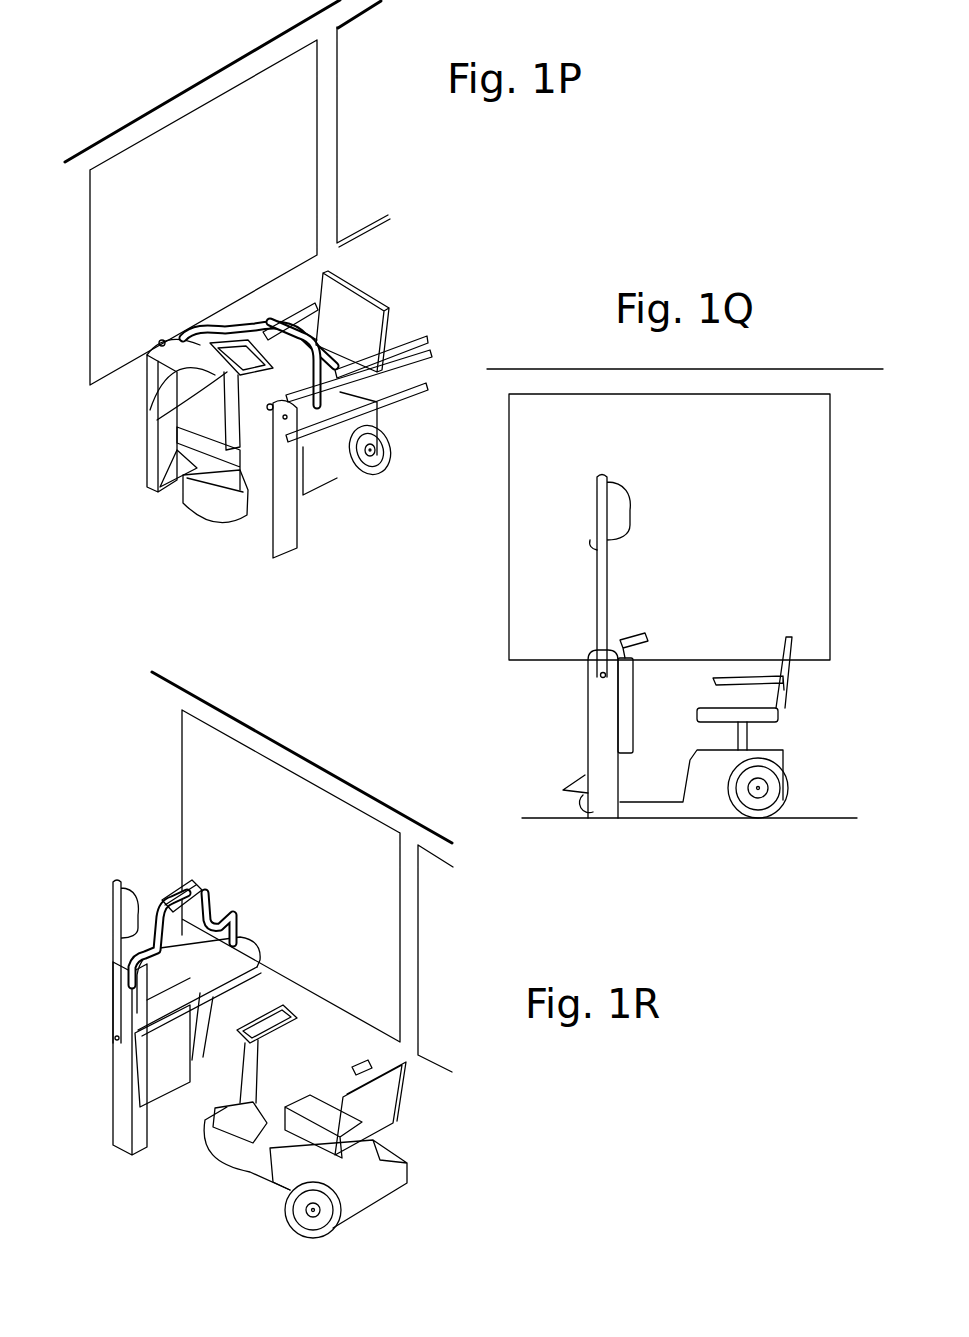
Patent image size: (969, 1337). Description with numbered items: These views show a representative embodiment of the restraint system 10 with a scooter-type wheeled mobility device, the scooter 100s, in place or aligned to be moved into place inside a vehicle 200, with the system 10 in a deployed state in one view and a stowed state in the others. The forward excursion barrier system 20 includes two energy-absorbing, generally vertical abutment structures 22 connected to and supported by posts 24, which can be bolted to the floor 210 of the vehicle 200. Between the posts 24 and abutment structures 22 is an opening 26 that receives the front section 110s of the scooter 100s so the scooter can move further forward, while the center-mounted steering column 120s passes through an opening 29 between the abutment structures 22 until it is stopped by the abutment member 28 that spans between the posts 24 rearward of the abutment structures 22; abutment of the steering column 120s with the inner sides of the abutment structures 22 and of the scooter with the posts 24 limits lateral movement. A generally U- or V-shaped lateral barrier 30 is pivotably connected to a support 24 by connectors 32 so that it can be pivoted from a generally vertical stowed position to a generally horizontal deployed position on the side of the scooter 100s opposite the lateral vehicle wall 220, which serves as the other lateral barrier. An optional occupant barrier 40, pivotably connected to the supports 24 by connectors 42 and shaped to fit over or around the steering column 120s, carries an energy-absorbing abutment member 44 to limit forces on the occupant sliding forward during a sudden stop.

In FIG. 1P, the system 10 is at (217, 313).
In FIG. 1Q, the system 10 is at (554, 554).
In FIG. 1P, the forward excursion barrier system 20 is at (243, 440).
In FIG. 1Q, the forward excursion barrier system 20 is at (585, 733).
In FIG. 1R, the forward excursion barrier system 20 is at (219, 1009).
In FIG. 1P, the abutment structures 22 is at (186, 423).
In FIG. 1Q, the abutment structures 22 is at (632, 697).
In FIG. 1R, the abutment structures 22 is at (250, 990).
In FIG. 1P, the posts 24 is at (160, 415).
In FIG. 1Q, the posts 24 is at (608, 787).
In FIG. 1R, the posts 24 is at (122, 1113).
In FIG. 1P, the opening 26 is at (193, 470).
In FIG. 1R, the opening 26 is at (197, 1093).
In FIG. 1P, the abutment member 28 is at (193, 445).
In FIG. 1P, the opening 29 is at (188, 422).
In FIG. 1R, the opening 29 is at (273, 997).
In FIG. 1P, the lateral barrier 30 is at (433, 353).
In FIG. 1Q, the lateral barrier 30 is at (610, 492).
In FIG. 1R, the lateral barrier 30 is at (117, 877).
In FIG. 1P, the connectors 32 is at (323, 470).
In FIG. 1Q, the connectors 32 is at (587, 673).
In FIG. 1R, the connectors 32 is at (112, 1040).
In FIG. 1P, the occupant barrier 40 is at (217, 308).
In FIG. 1R, the occupant barrier 40 is at (217, 903).
In FIG. 1P, the connectors 42 is at (282, 420).
In FIG. 1P, the abutment member 44 is at (285, 320).
In FIG. 1Q, the abutment member 44 is at (590, 540).
In FIG. 1R, the abutment member 44 is at (177, 890).
In FIG. 1P, the scooter 100s is at (377, 290).
In FIG. 1Q, the scooter 100s is at (800, 700).
In FIG. 1R, the scooter 100s is at (353, 1121).
In FIG. 1P, the front section 110s is at (200, 497).
In FIG. 1Q, the front section 110s is at (525, 788).
In FIG. 1R, the front section 110s is at (207, 1123).
In FIG. 1P, the steering column 120s is at (187, 325).
In FIG. 1Q, the steering column 120s is at (637, 625).
In FIG. 1R, the steering column 120s is at (270, 1057).
In FIG. 1P, the vehicle 200 is at (187, 82).
In FIG. 1Q, the vehicle 200 is at (808, 363).
In FIG. 1R, the vehicle 200 is at (278, 728).
In FIG. 1P, the floor 210 is at (130, 557).
In FIG. 1Q, the floor 210 is at (785, 842).
In FIG. 1R, the floor 210 is at (407, 1210).
In FIG. 1P, the vehicle wall 220 is at (65, 207).
In FIG. 1Q, the vehicle wall 220 is at (848, 408).
In FIG. 1R, the vehicle wall 220 is at (153, 725).